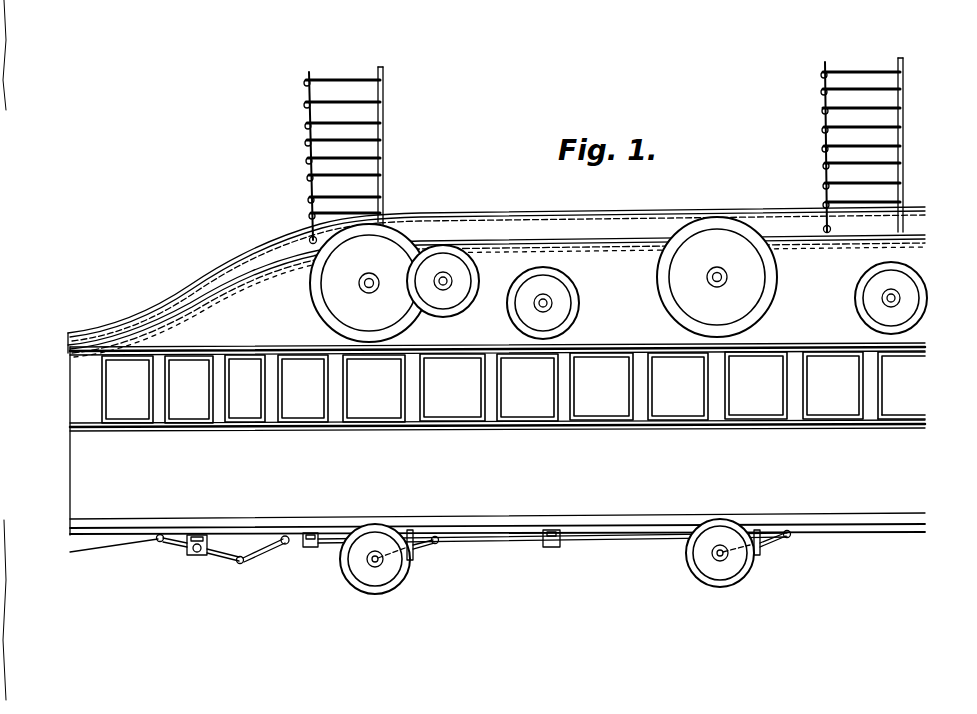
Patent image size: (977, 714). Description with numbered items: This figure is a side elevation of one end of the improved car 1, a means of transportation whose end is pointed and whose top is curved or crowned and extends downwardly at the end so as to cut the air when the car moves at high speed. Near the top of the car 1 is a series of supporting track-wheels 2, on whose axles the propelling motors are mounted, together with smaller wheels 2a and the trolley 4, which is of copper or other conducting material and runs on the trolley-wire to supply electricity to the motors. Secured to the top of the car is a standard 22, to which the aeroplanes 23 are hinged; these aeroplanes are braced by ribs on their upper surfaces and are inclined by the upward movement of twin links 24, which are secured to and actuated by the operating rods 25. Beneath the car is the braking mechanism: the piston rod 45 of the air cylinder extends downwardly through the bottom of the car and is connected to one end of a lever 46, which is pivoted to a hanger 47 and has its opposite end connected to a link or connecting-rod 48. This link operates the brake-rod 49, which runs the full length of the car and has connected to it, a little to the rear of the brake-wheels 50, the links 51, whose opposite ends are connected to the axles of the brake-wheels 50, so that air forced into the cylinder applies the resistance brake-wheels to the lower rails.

The car 1 is at (496, 371).
The supporting track-wheels 2 is at (543, 279).
The small pulley wheel 2a is at (717, 299).
The trolley 4 is at (443, 283).
The standard 22 is at (384, 88).
The aeroplanes 23 is at (333, 78).
The twin links 24 is at (307, 138).
The operating rods 25 is at (307, 79).
The piston rod 45 is at (87, 555).
The lever 46 is at (220, 559).
The hanger 47 is at (186, 548).
The link or connecting-rod 48 is at (263, 556).
The brake-rod 49 is at (500, 543).
The brake-wheels 50 is at (380, 588).
The links 51 is at (417, 548).